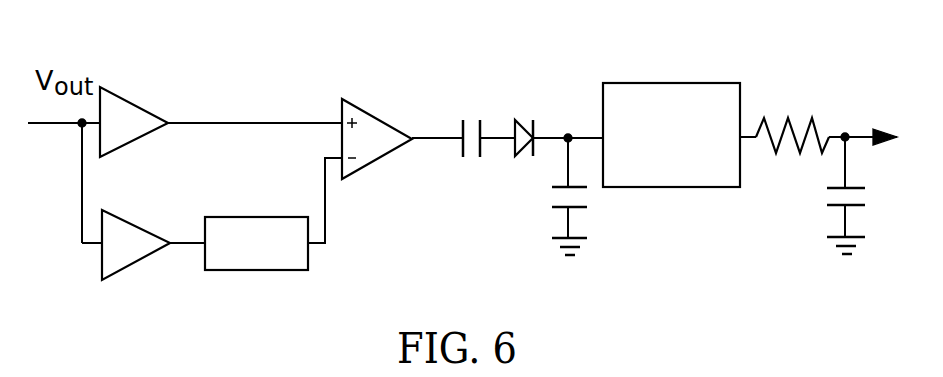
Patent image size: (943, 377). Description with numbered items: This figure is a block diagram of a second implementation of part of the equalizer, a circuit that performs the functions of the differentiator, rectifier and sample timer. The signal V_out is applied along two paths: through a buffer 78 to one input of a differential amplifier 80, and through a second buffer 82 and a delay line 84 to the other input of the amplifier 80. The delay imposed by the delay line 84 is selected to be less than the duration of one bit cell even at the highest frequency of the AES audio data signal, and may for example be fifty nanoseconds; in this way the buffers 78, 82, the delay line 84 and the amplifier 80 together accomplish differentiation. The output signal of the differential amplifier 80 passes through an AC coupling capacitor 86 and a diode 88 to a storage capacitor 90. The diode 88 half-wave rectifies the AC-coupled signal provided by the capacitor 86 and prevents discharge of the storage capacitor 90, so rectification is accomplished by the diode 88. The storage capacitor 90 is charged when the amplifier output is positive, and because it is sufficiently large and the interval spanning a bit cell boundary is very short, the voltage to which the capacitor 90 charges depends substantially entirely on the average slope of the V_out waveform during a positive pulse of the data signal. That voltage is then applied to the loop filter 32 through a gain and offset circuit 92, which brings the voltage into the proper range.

The buffer 78 is at (137, 103).
The differential amplifier 80 is at (375, 123).
The buffer 82 is at (140, 263).
The delay line 84 is at (258, 270).
The AC coupling capacitor 86 is at (472, 123).
The diode 88 is at (534, 123).
The storage capacitor 90 is at (552, 195).
The gain and offset circuit 92 is at (655, 83).
The loop filter 32 is at (821, 84).